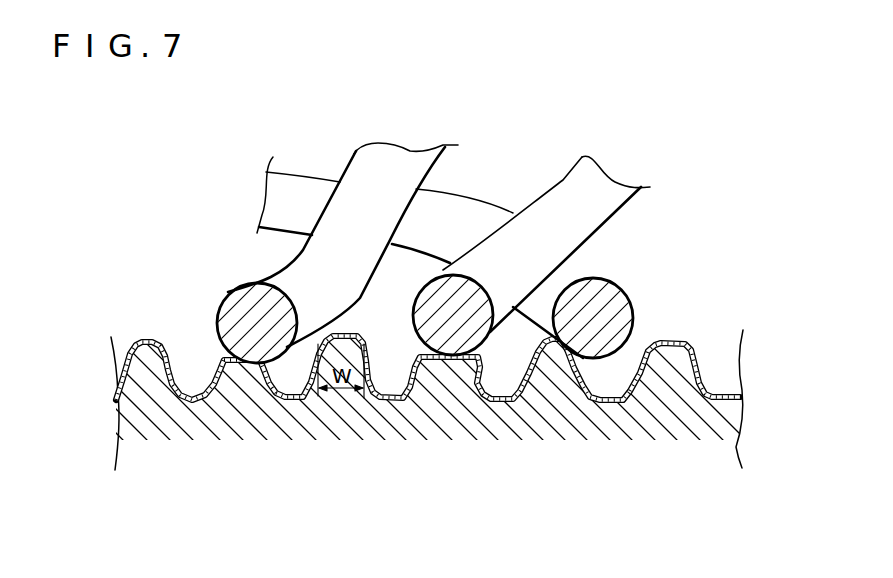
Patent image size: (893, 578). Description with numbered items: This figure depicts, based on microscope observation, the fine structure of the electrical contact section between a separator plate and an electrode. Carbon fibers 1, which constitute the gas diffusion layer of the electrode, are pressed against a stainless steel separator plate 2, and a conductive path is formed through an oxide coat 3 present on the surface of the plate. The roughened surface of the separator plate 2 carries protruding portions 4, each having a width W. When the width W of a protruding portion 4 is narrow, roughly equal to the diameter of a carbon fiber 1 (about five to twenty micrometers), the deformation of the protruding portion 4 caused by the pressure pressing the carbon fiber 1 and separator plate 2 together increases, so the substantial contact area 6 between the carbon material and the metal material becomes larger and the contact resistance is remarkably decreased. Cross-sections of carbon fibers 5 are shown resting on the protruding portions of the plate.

The carbon fiber 1 is at (533, 261).
The separator plate 2 is at (690, 423).
The oxide coat 3 is at (458, 390).
The protruding portion 4 is at (693, 345).
The yarn cross-section (weft) 5 is at (632, 293).
The substantial contact area 6 is at (232, 372).